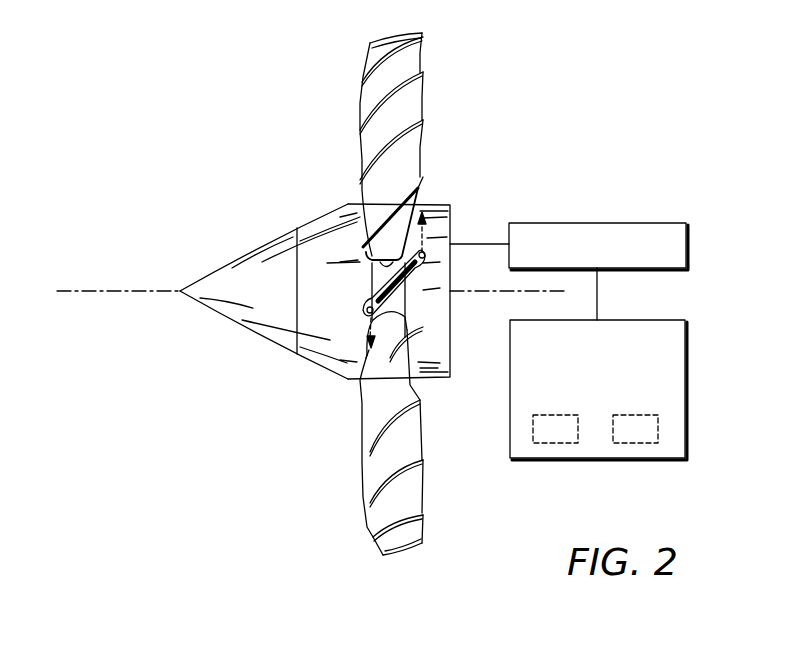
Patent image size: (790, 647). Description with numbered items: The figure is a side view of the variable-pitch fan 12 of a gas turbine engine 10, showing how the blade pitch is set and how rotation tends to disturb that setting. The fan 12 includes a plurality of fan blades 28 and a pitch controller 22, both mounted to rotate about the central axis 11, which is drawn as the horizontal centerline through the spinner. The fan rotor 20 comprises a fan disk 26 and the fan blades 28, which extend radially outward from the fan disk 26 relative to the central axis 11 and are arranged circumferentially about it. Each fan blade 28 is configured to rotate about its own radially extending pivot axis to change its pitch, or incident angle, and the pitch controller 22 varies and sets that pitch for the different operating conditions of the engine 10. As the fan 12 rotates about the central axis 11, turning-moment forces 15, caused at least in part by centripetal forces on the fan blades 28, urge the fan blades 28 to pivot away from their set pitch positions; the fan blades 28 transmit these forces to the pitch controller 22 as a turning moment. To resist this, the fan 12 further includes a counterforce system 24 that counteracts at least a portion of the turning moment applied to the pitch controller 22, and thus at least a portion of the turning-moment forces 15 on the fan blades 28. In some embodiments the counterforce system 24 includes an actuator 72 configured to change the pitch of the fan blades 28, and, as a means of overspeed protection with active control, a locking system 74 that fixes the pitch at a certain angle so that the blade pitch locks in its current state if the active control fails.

The gas turbine engine 10 is at (136, 125).
The central axis 11 is at (113, 288).
The variable-pitch fan 12 is at (300, 154).
The turning-moment forces 15 is at (437, 232).
The fan rotor 20 is at (279, 431).
The pitch controller 22 is at (632, 223).
The counterforce system 24 is at (632, 320).
The fan disk 26 is at (407, 306).
The fan blade 28 is at (393, 165).
The actuator 72 is at (552, 443).
The locking system 74 is at (632, 443).